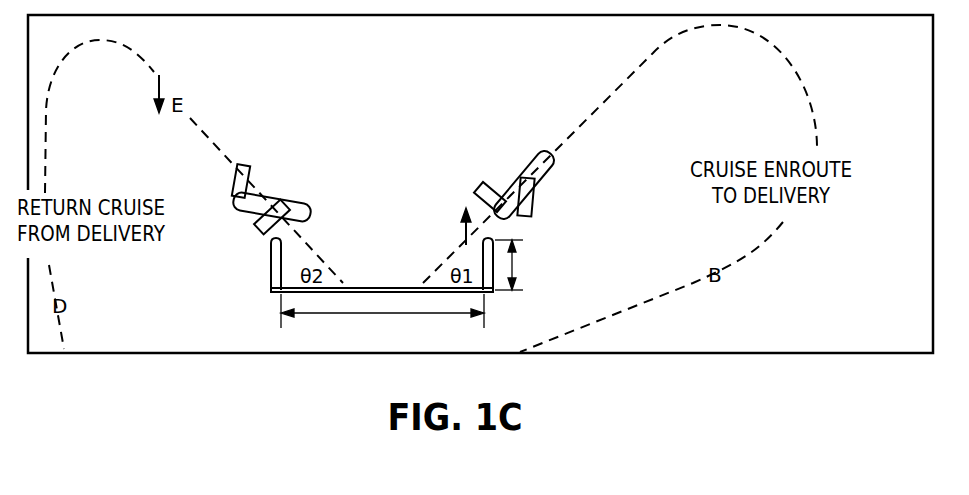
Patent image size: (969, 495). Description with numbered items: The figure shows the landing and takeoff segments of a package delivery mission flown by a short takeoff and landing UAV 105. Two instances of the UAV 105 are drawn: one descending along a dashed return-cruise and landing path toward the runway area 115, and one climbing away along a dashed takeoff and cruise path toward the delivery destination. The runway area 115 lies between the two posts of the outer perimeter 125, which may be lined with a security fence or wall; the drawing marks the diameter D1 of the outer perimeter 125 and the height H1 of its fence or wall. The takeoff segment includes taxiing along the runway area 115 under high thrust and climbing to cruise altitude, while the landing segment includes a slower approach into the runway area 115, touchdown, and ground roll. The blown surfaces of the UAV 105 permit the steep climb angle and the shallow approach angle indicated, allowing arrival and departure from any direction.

The UAV 105 is at (269, 168).
The runway area 115 is at (393, 222).
The outer perimeter 125 is at (277, 267).